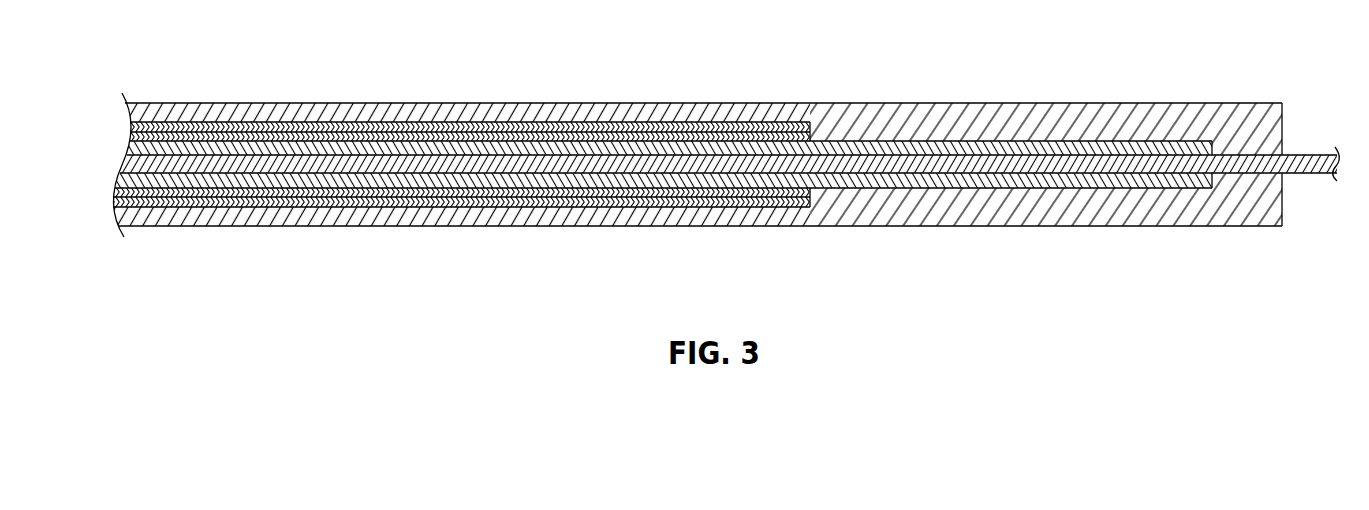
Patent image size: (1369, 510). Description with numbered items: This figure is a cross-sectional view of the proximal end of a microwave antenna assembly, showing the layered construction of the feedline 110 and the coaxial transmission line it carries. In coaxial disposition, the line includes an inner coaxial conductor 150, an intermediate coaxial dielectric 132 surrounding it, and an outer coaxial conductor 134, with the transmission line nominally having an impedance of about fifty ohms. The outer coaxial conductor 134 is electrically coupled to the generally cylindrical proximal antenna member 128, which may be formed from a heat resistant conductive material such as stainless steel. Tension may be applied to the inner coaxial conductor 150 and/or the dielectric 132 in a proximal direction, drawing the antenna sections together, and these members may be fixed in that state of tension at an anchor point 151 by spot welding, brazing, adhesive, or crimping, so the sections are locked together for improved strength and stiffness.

The feedline 110 is at (652, 103).
The proximal antenna member 128 is at (480, 135).
The intermediate coaxial dielectric 132 is at (390, 150).
The outer coaxial conductor 134 is at (257, 140).
The inner coaxial conductor 150 is at (1238, 167).
The anchor point 151 is at (808, 135).